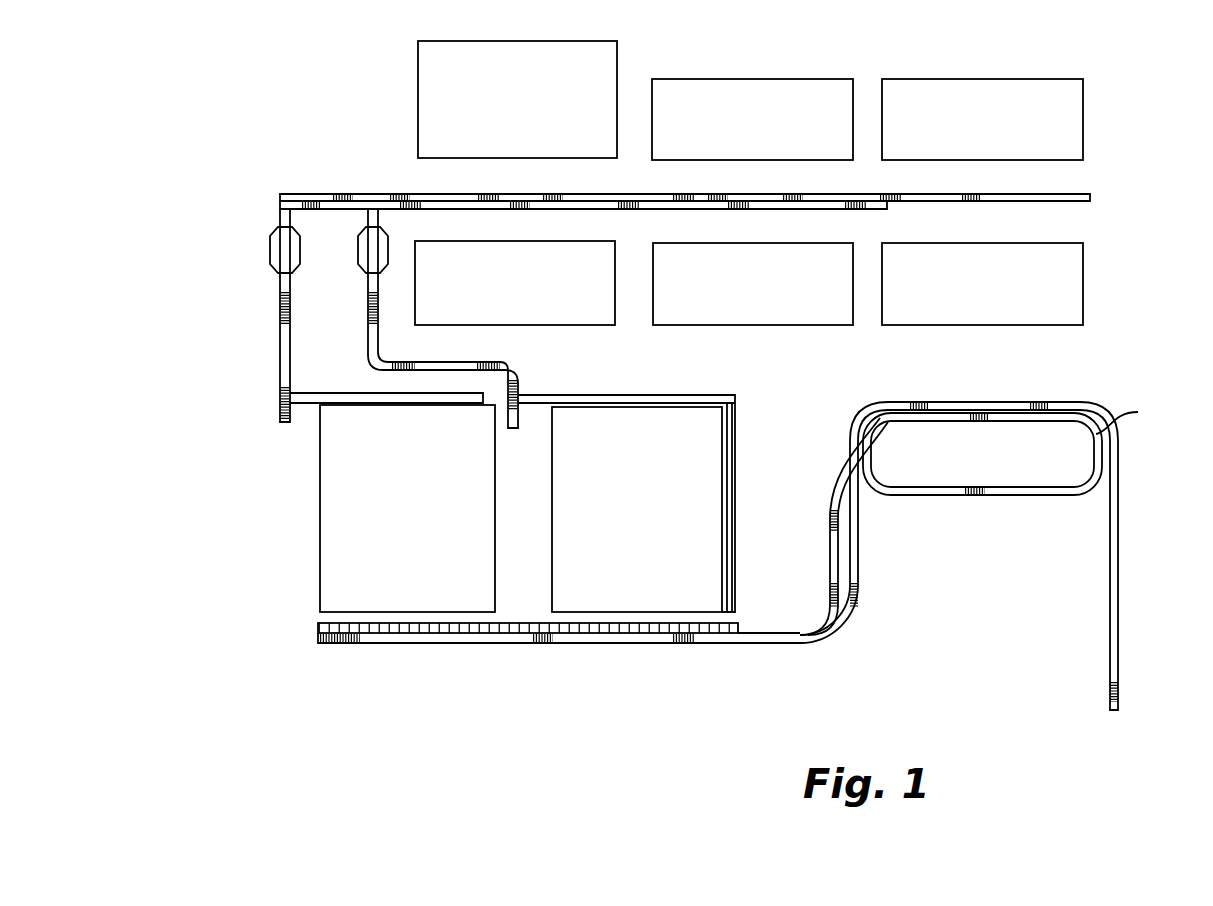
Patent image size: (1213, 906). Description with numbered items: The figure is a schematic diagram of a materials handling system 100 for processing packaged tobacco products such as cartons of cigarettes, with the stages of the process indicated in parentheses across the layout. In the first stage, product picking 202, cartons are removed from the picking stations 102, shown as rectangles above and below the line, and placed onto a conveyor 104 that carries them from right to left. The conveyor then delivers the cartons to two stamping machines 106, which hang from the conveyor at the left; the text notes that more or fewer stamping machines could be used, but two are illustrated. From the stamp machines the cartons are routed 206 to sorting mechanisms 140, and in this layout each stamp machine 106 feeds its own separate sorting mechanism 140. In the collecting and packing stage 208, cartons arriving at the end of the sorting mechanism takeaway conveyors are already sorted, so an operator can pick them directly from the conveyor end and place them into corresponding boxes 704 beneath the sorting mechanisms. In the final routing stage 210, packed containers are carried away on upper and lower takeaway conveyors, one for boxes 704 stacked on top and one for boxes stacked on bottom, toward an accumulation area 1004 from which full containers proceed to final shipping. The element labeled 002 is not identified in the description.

The materials handling system 100 is at (473, 692).
The picking stations 102 is at (508, 40).
The conveyor 104 is at (685, 197).
The stamping machines 106 is at (280, 222).
The sorting mechanisms 140 is at (320, 483).
The pipe junction 002 is at (830, 582).
The accumulation area 1004 is at (1146, 418).
The boxes 704 is at (393, 672).
The product picking step 202 is at (776, 196).
The routing to sorting mechanisms step 206 is at (512, 483).
The collecting and packing step 208 is at (559, 660).
The routing for final shipping step 210 is at (990, 556).